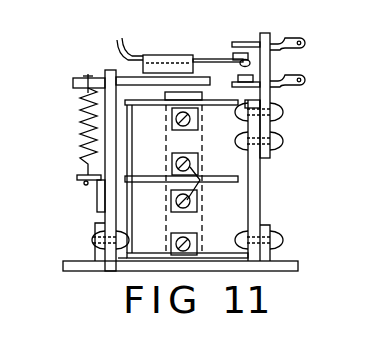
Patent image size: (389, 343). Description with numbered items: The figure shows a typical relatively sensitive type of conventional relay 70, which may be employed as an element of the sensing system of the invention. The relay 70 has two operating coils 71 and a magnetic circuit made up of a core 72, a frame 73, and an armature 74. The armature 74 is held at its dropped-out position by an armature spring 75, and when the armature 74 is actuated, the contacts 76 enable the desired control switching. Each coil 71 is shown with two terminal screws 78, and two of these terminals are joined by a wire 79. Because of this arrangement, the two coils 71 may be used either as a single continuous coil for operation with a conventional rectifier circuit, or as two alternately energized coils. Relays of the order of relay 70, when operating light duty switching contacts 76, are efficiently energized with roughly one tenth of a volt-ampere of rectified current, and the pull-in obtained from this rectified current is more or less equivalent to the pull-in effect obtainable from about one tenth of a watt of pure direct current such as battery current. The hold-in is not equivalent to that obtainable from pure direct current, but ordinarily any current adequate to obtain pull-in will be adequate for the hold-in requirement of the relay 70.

The relay 70 is at (290, 153).
The operating coil 71 is at (220, 202).
The core 72 is at (203, 218).
The frame 73 is at (110, 215).
The armature 74 is at (130, 78).
The armature spring 75 is at (80, 150).
The contacts 76 is at (242, 61).
The terminal screw 78 is at (172, 120).
The wire 79 is at (200, 180).